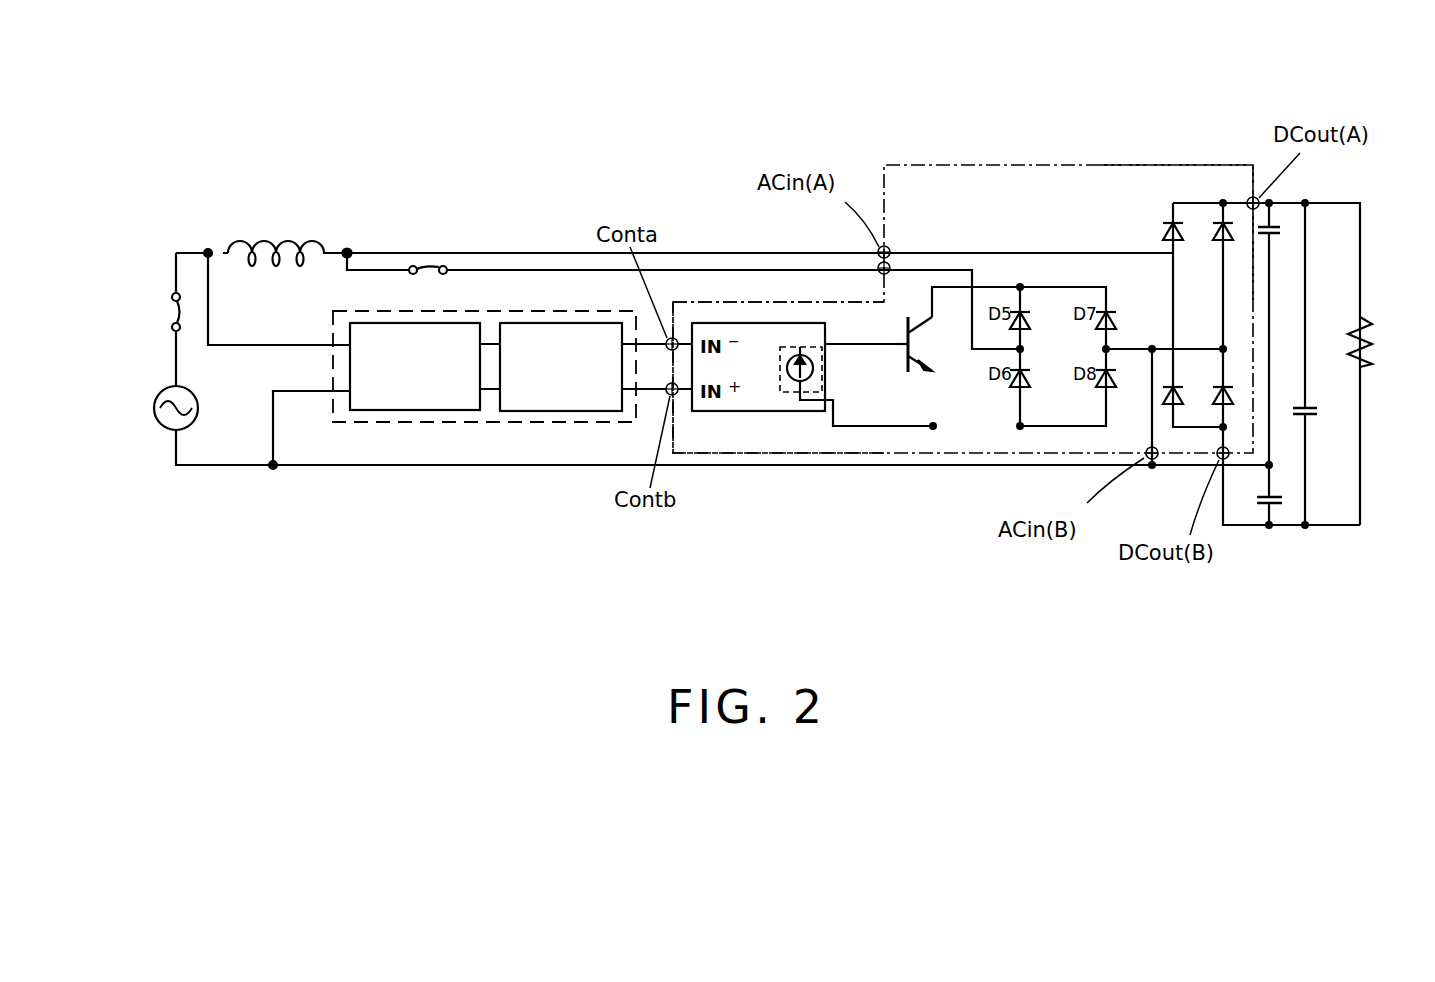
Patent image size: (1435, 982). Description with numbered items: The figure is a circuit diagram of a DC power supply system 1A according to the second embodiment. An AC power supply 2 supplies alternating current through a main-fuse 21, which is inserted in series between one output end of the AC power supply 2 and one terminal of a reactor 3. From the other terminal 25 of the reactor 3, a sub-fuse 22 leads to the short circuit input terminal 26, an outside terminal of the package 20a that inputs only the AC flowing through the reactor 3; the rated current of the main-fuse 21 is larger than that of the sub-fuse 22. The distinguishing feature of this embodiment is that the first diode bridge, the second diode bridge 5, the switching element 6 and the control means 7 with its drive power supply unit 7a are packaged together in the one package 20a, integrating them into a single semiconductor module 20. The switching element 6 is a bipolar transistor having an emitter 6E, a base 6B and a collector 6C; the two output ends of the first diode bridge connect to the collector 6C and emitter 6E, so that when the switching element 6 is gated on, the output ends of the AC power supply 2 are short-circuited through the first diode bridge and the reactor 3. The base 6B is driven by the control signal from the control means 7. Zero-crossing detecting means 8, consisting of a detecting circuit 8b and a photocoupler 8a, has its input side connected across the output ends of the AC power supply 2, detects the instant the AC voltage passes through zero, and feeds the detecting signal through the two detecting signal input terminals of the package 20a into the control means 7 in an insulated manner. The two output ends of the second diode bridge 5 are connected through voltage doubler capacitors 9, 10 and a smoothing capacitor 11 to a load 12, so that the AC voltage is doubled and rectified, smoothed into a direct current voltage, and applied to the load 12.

The DC power supply system 1A is at (881, 132).
The AC power supply 2 is at (158, 395).
The reactor 3 is at (272, 243).
The second diode bridge 5 is at (1203, 192).
The switching element 6 is at (934, 341).
The base 6B is at (900, 350).
The collector 6C is at (932, 320).
The emitter 6E is at (934, 374).
The control means 7 is at (712, 323).
The drive power supply unit 7a is at (782, 383).
The zero-crossing detecting means 8 is at (609, 428).
The photocoupler 8a is at (560, 323).
The detecting circuit 8b is at (413, 323).
The voltage doubler capacitor 9 is at (1283, 230).
The voltage doubler capacitor 10 is at (1283, 500).
The smoothing capacitor 11 is at (1310, 415).
The load 12 is at (1374, 342).
The semiconductor module 20 is at (1140, 166).
The package 20a is at (1048, 165).
The main-fuse 21 is at (172, 296).
The sub-fuse 22 is at (430, 264).
The other terminal of the reactor 25 is at (348, 250).
The short circuit input terminal 26 is at (878, 266).